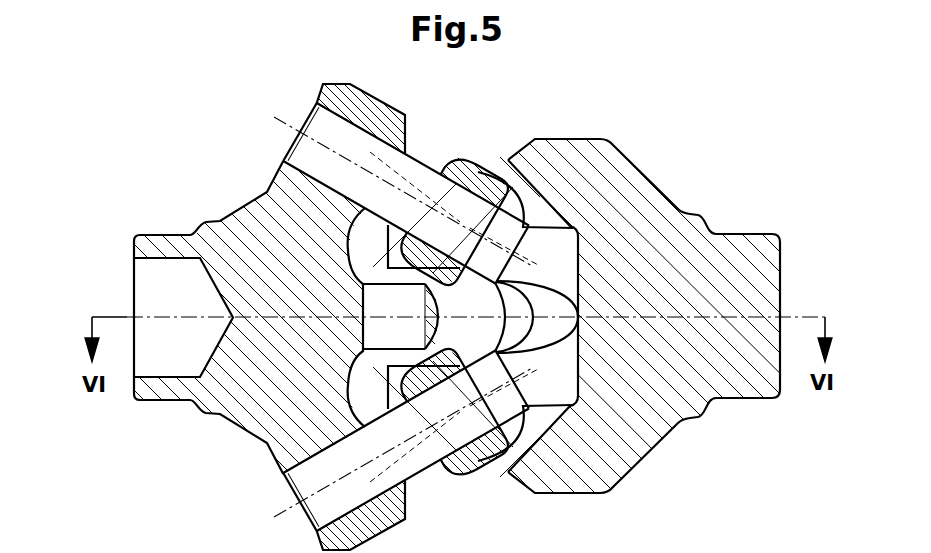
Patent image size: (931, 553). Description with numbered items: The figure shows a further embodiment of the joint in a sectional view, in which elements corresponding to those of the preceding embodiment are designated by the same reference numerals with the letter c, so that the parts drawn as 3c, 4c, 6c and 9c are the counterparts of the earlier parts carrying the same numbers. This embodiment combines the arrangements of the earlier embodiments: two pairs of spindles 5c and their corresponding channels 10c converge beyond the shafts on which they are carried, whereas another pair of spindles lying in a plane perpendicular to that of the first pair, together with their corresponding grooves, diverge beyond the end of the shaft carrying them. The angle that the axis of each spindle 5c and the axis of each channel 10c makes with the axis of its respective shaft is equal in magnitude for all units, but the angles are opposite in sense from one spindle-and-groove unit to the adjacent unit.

The first yoke 3c is at (242, 252).
The end cap 4c is at (314, 90).
The spindle 5c is at (416, 178).
The bearing cup 6c is at (460, 167).
The second yoke 9c is at (633, 188).
The channel 10c is at (508, 172).